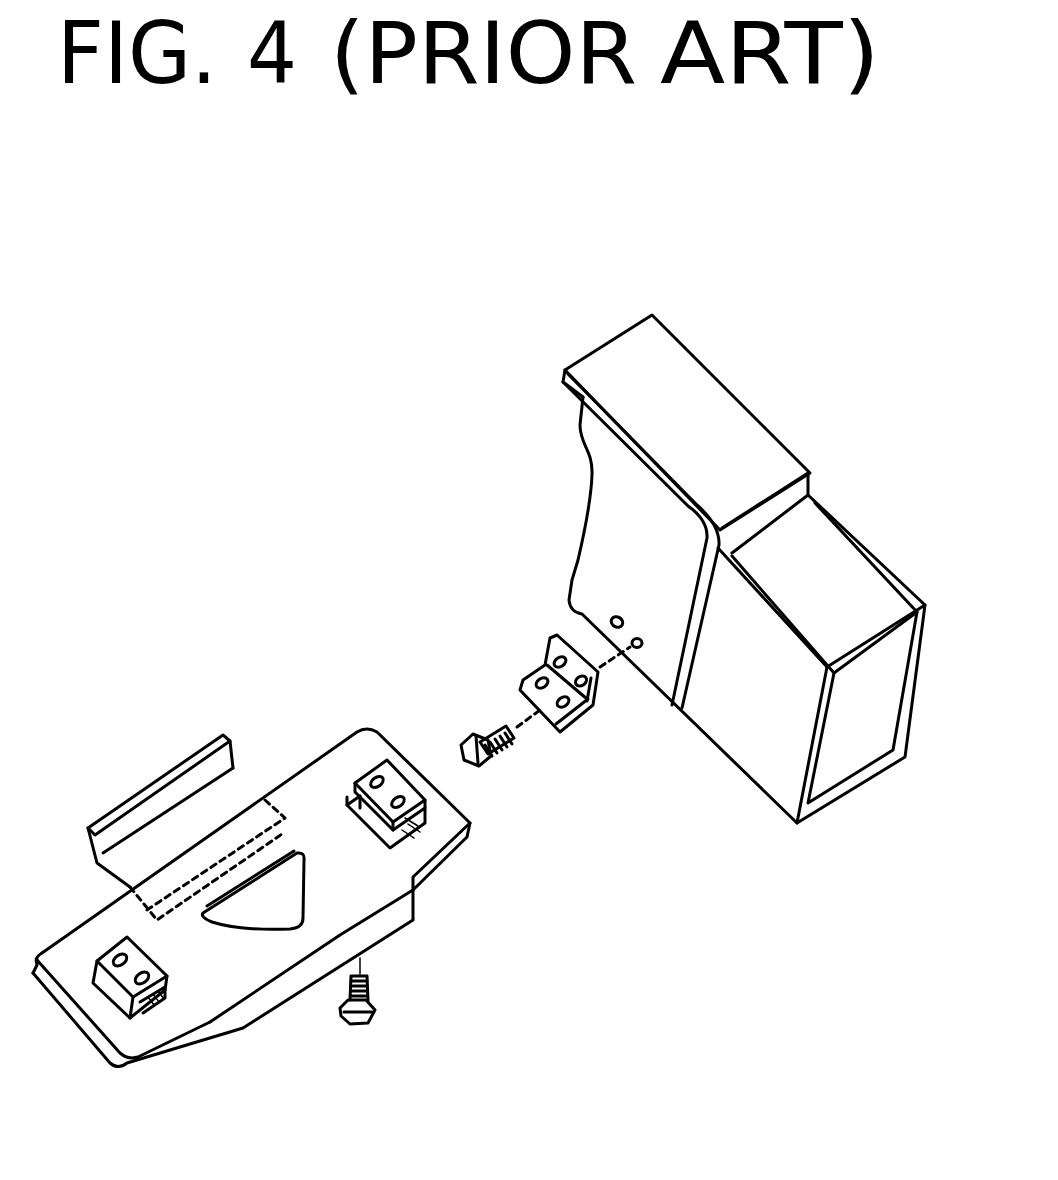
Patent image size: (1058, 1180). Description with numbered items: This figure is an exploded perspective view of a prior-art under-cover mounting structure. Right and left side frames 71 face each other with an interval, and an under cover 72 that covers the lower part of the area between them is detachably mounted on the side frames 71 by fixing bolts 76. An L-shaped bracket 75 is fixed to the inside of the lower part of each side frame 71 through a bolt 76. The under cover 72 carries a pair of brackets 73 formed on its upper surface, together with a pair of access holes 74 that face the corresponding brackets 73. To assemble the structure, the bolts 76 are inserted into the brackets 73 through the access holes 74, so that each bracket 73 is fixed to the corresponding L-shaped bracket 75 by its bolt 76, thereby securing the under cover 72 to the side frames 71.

The side frame 71 is at (579, 520).
The under cover 72 is at (311, 755).
The bracket 73 is at (125, 940).
The access hole 74 is at (145, 1012).
The L-shaped bracket 75 is at (583, 722).
The bolt 76 is at (498, 763).